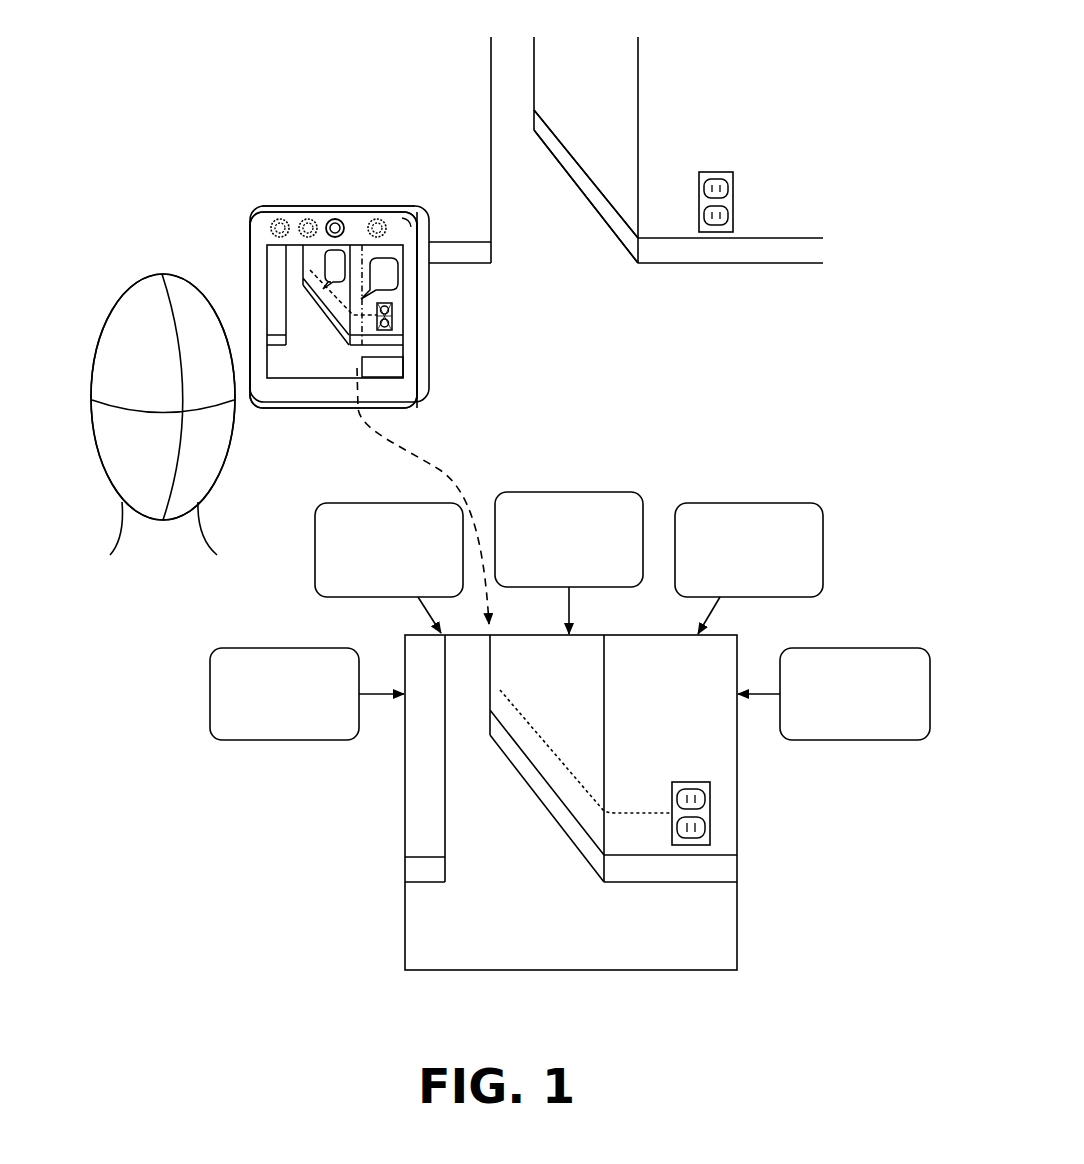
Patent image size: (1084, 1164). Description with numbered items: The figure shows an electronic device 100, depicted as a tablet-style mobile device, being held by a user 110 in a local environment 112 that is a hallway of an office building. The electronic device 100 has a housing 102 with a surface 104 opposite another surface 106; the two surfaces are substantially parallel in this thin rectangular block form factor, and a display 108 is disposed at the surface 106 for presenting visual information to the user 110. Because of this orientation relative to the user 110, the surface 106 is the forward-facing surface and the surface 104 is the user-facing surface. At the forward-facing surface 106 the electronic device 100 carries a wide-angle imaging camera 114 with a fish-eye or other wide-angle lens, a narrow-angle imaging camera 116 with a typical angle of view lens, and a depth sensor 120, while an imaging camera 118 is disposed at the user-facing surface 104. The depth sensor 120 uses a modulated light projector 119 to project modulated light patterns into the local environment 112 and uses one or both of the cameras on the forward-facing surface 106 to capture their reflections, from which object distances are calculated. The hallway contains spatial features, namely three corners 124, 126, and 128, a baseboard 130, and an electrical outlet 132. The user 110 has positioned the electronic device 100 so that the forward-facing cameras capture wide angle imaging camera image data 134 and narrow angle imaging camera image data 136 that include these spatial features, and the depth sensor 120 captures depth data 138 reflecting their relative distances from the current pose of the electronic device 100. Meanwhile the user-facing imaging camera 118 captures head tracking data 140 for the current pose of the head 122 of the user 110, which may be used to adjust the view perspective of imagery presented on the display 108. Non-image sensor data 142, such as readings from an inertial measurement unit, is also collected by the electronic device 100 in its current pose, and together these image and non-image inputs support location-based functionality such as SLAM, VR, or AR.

The electronic device 100 is at (243, 271).
The housing 102 is at (428, 322).
The surface 104 is at (307, 401).
The surface 106 is at (441, 383).
The display 108 is at (423, 490).
The user 110 is at (155, 561).
The local environment 112 is at (594, 286).
The wide-angle imaging camera 114 is at (272, 221).
The narrow-angle imaging camera 116 is at (384, 220).
The imaging camera 118 is at (342, 220).
The modulated light projector 119 is at (302, 220).
The depth sensor 120 is at (294, 211).
The head 122 is at (126, 290).
The corner 124 is at (491, 225).
The corner 126 is at (638, 108).
The corner 128 is at (534, 75).
The baseboard 130 is at (613, 223).
The electrical outlet 132 is at (733, 197).
The wide angle imaging camera image data 134 is at (274, 648).
The narrow angle imaging camera image data 136 is at (389, 503).
The depth data 138 is at (574, 492).
The head tracking data 140 is at (751, 503).
The non-image sensor data 142 is at (863, 648).